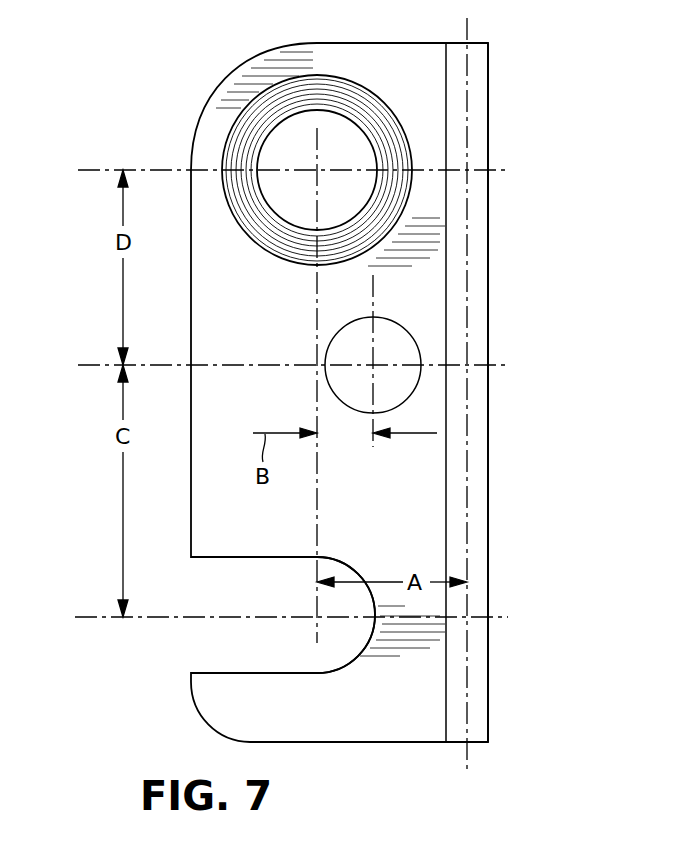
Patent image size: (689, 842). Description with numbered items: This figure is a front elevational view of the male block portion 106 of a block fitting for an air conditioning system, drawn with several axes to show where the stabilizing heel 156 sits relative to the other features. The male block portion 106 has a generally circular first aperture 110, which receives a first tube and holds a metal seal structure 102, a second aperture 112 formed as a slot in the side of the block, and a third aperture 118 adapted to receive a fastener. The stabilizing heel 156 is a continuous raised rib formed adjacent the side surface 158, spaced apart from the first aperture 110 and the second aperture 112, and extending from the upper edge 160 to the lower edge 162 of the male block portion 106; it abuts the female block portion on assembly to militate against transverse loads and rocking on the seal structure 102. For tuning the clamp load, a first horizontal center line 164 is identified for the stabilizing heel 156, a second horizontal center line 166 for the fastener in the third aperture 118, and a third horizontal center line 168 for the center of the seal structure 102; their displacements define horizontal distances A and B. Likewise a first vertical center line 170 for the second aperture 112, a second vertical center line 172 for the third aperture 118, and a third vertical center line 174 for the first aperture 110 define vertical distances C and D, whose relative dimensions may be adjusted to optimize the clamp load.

The metal seal structure 102 is at (277, 108).
The male block portion 106 is at (190, 86).
The first aperture 110 is at (360, 82).
The second aperture 112 is at (337, 673).
The third aperture 118 is at (413, 338).
The stabilizing heel 156 is at (489, 647).
The side surface 158 is at (489, 522).
The upper edge 160 is at (317, 42).
The lower edge 162 is at (305, 742).
The first horizontal center line 164 is at (467, 700).
The second horizontal center line 166 is at (373, 292).
The third horizontal center line 168 is at (317, 517).
The first vertical center line 170 is at (88, 618).
The second vertical center line 172 is at (222, 362).
The third vertical center line 174 is at (160, 168).